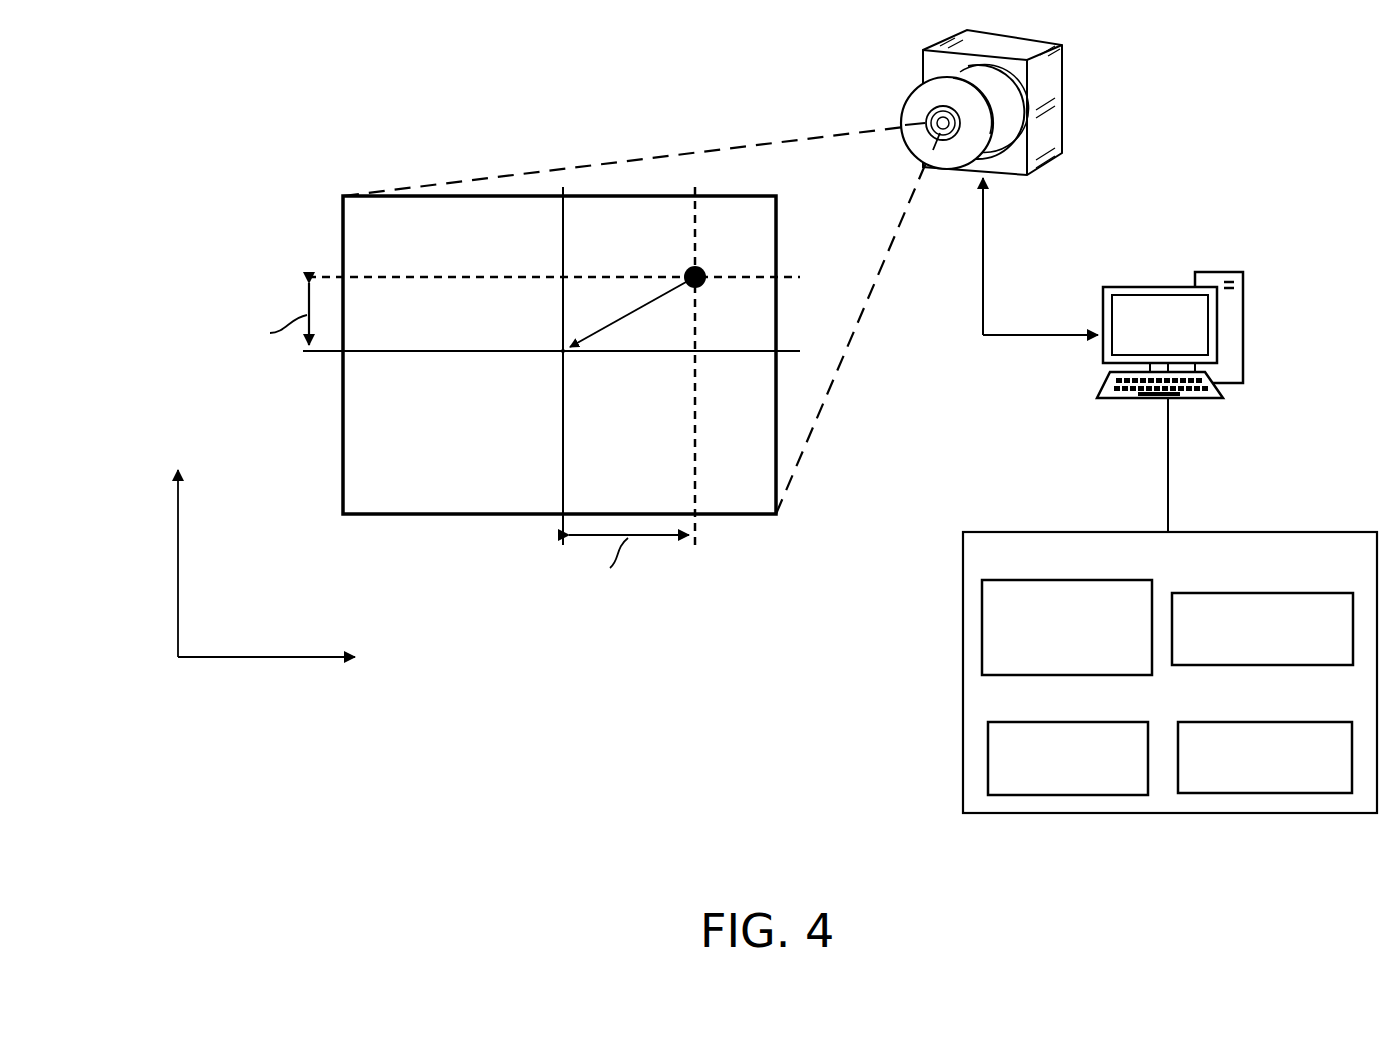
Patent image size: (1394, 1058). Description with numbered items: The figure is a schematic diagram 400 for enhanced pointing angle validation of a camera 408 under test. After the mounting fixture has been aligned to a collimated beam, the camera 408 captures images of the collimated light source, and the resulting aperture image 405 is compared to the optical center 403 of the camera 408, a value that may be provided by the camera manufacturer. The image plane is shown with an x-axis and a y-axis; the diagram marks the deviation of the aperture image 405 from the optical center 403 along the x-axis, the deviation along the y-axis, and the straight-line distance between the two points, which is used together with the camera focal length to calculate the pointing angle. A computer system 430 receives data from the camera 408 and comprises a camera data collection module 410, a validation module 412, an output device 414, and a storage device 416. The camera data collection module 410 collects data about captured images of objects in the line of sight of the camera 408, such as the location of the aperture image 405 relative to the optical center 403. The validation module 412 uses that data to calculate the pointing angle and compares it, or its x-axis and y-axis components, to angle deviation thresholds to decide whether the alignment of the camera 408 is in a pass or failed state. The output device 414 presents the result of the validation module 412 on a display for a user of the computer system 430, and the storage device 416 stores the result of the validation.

The schematic diagram 400 is at (250, 88).
The optical center 403 is at (568, 358).
The aperture image 405 is at (710, 289).
The camera 408 is at (1065, 107).
The computer system 430 is at (1245, 305).
The camera data collection module 410 is at (1050, 580).
The validation module 412 is at (1262, 593).
The output device 414 is at (1265, 722).
The storage device 416 is at (1061, 722).